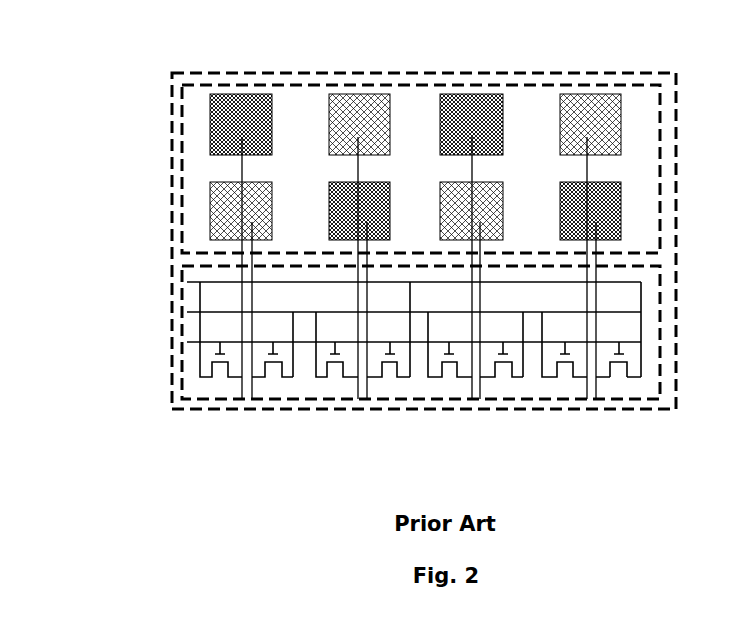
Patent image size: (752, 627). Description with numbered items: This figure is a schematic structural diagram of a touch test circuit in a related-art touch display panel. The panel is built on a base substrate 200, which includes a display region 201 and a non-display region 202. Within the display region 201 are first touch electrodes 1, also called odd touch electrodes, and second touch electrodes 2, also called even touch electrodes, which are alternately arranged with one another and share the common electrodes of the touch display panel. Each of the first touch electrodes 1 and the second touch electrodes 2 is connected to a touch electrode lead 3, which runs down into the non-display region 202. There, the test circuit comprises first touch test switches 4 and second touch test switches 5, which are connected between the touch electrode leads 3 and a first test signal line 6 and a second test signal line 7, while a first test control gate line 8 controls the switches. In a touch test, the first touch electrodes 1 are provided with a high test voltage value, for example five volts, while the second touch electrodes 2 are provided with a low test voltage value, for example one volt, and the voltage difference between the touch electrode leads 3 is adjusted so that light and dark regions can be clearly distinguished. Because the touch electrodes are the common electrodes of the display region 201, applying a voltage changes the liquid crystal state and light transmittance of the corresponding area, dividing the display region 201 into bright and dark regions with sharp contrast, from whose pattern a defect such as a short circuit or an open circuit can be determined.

The first touch electrode 1 is at (598, 110).
The second touch electrode 2 is at (243, 115).
The touch electrode lead 3 is at (243, 263).
The first touch test switch 4 is at (545, 382).
The second touch test switch 5 is at (625, 377).
The first test signal line 6 is at (213, 309).
The second test signal line 7 is at (627, 280).
The first test control gate line 8 is at (633, 340).
The base substrate 200 is at (482, 72).
The display region 201 is at (355, 83).
The non-display region 202 is at (293, 398).